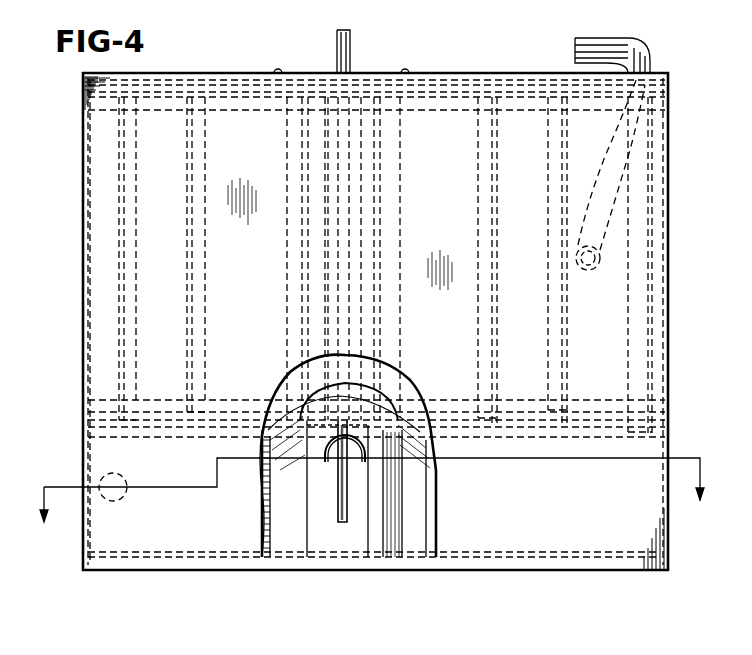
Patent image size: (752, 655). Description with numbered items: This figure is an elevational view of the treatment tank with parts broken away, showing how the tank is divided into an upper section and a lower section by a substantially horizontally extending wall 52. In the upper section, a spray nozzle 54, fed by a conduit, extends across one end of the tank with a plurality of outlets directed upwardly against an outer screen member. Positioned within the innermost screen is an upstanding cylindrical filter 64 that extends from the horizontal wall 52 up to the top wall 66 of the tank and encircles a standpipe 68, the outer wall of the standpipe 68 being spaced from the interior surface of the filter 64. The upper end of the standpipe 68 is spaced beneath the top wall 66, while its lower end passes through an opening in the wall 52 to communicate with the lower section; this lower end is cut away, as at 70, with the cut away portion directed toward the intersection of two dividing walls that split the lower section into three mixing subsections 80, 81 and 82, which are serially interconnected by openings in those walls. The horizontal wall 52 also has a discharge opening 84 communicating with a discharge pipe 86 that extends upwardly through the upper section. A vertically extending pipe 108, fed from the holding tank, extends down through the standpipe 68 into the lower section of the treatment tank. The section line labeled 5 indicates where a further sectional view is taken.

The section line 5- 5 is at (372, 476).
The horizontally extending wall 52 is at (490, 420).
The spray nozzle 54 is at (600, 258).
The filter 64 is at (400, 125).
The top wall 66 is at (450, 78).
The standpipe 68 is at (360, 178).
The cut away portion 70 is at (372, 462).
The mixing subsection 80 is at (358, 538).
The mixing subsection 81 is at (279, 542).
The mixing subsection 82 is at (422, 531).
The discharge opening 84 is at (636, 435).
The discharge pipe 86 is at (650, 55).
The vertically extending pipe 108 is at (337, 50).